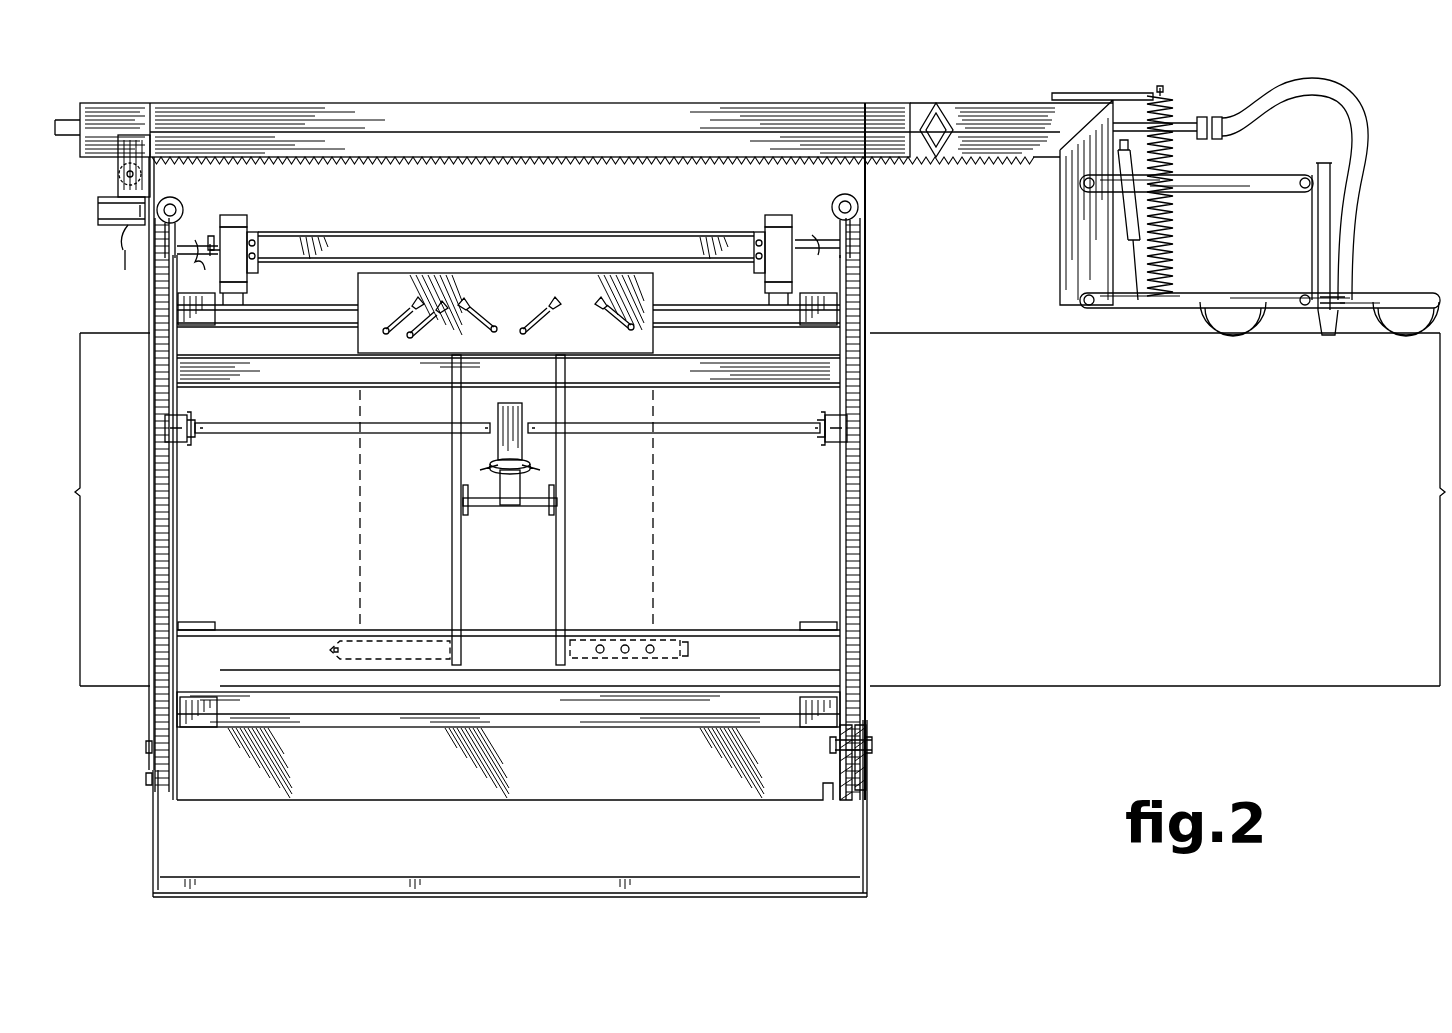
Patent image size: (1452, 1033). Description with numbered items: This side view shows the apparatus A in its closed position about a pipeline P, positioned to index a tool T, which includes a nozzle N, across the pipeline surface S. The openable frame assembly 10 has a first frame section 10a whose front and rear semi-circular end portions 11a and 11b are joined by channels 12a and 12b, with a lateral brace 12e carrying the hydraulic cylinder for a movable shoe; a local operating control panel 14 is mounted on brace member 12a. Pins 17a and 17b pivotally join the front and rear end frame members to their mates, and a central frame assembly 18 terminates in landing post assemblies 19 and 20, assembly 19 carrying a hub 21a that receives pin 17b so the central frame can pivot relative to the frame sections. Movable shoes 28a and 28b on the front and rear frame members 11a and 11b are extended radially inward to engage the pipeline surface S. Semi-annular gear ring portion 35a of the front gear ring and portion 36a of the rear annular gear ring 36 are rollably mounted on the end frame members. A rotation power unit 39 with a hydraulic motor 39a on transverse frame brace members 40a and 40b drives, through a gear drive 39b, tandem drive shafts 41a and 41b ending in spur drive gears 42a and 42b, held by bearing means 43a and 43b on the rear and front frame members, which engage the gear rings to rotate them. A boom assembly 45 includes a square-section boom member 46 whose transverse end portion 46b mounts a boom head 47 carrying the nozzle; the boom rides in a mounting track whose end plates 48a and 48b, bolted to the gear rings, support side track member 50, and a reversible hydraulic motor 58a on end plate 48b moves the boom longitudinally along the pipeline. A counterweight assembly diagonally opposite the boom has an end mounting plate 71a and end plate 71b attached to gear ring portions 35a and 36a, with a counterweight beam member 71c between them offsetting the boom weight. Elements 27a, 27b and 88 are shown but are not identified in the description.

The openable frame assembly 10 is at (898, 257).
The first frame section 10a is at (132, 803).
The front semi-circular end portion 11a is at (840, 528).
The rear semi-circular end portion 11b is at (177, 525).
The channel 12a is at (269, 305).
The channel 12b is at (238, 630).
The lateral brace 12e is at (590, 710).
The local operating control panel 14 is at (439, 273).
The pin 17a is at (815, 235).
The pin 17b is at (190, 244).
The central frame assembly 18 is at (508, 217).
The landing post assembly 19 is at (245, 218).
The landing post assembly 20 is at (765, 218).
The hub 21a is at (208, 254).
The right guide block 27a is at (830, 345).
The left guide block 27b is at (182, 318).
The movable shoe 28a is at (832, 682).
The movable shoe 28b is at (222, 725).
The semi-annular gear ring portion 35a is at (853, 500).
The rear annular gear ring 36 is at (153, 682).
The semi-annular gear ring portion 36a is at (160, 516).
The rotation power unit 39 is at (474, 458).
The hydraulic motor 39a is at (513, 505).
The gear drive 39b is at (526, 440).
The transverse frame brace member 40a is at (565, 558).
The transverse frame brace member 40b is at (462, 585).
The drive shaft 41a is at (328, 434).
The drive shaft 41b is at (720, 434).
The spur drive gear 42a is at (164, 420).
The drive spur gear 42b is at (847, 420).
The bearing means 43a is at (186, 445).
The bearing means 43b is at (830, 440).
The boom assembly 45 is at (960, 87).
The boom member 46 is at (880, 105).
The transverse end portion 46b is at (1058, 195).
The boom head 47 is at (1398, 92).
The end plate 48a is at (865, 205).
The end plate 48b is at (150, 242).
The side track member 50 is at (433, 105).
The hydraulic motor 58a is at (102, 198).
The end mounting plate 71a is at (870, 841).
The end plate 71b is at (164, 850).
The counterweight beam member 71c is at (500, 870).
The sensor unit 88 is at (692, 640).
The apparatus A is at (900, 759).
The nozzle N is at (1356, 252).
The pipeline P is at (1229, 686).
The surface S is at (1116, 502).
The tool T is at (1265, 118).